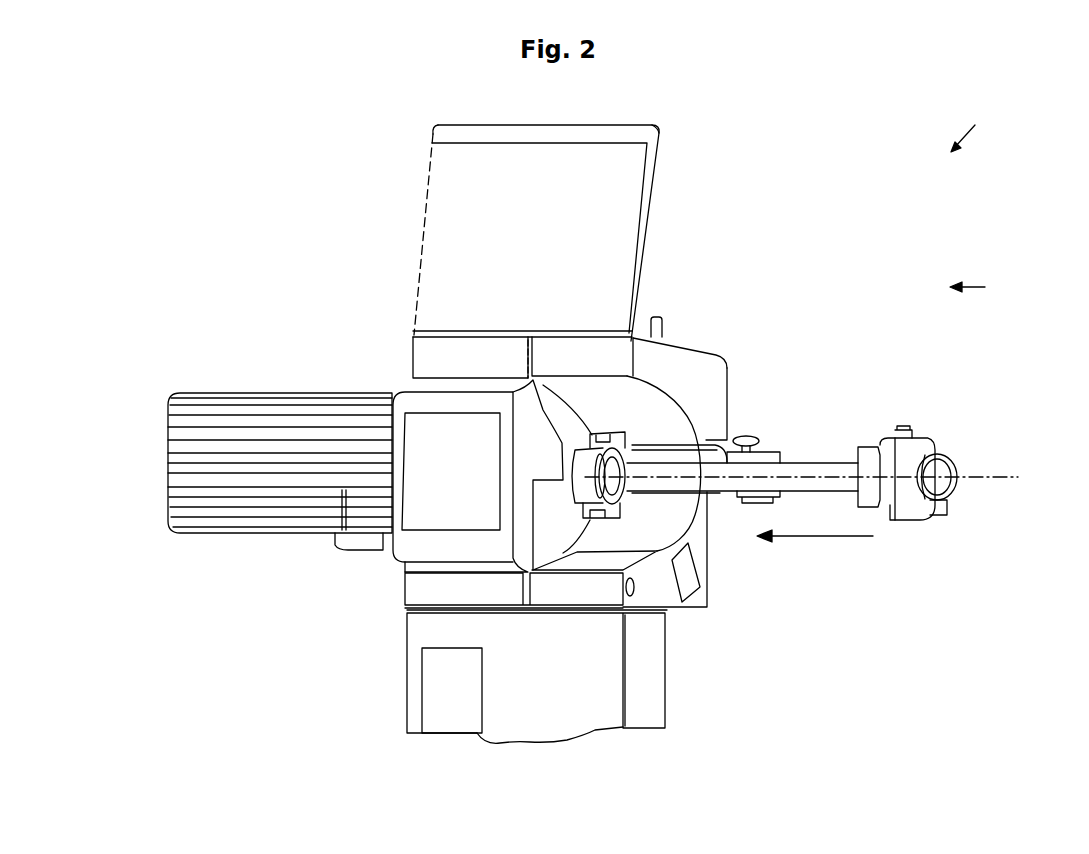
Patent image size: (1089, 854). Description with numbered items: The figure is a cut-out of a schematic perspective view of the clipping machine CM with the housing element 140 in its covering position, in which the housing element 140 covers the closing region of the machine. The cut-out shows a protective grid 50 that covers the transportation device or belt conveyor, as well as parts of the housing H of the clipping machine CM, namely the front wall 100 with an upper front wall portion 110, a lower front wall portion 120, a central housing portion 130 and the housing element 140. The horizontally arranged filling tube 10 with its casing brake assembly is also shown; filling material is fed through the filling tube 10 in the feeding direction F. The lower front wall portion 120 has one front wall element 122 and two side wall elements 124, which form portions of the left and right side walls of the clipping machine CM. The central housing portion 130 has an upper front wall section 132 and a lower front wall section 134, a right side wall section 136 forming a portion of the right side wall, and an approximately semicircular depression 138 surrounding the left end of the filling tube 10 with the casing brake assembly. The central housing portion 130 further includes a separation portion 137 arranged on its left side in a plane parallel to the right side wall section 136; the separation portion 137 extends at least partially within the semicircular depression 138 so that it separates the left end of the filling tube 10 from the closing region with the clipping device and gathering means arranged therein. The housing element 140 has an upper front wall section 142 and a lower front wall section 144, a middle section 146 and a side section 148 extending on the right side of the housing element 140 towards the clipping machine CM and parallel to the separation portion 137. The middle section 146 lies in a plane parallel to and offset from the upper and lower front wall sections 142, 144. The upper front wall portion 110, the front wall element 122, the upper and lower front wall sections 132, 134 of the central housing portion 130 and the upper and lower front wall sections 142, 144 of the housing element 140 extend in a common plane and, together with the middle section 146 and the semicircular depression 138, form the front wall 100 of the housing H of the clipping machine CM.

The filling tube 10 is at (830, 481).
The protective grid 50 is at (242, 413).
The front wall 100 is at (824, 236).
The upper front wall portion 110 is at (600, 212).
The lower front wall portion 120 is at (600, 648).
The front wall element 122 is at (593, 713).
The side wall elements 124 is at (407, 703).
The central housing portion 130 is at (680, 359).
The upper front wall section 132 is at (610, 360).
The lower front wall section 134 is at (598, 582).
The right side wall section 136 is at (712, 386).
The separation portion 137 is at (573, 418).
The semicircular depression 138 is at (673, 508).
The housing element 140 is at (435, 360).
The upper front wall section 142 is at (425, 368).
The lower front wall section 144 is at (425, 592).
The middle section 146 is at (425, 505).
The side section 148 is at (535, 462).
The clipping machine CM is at (1012, 119).
The housing H is at (984, 287).
The axis A is at (1005, 479).
The feeding direction F is at (815, 550).